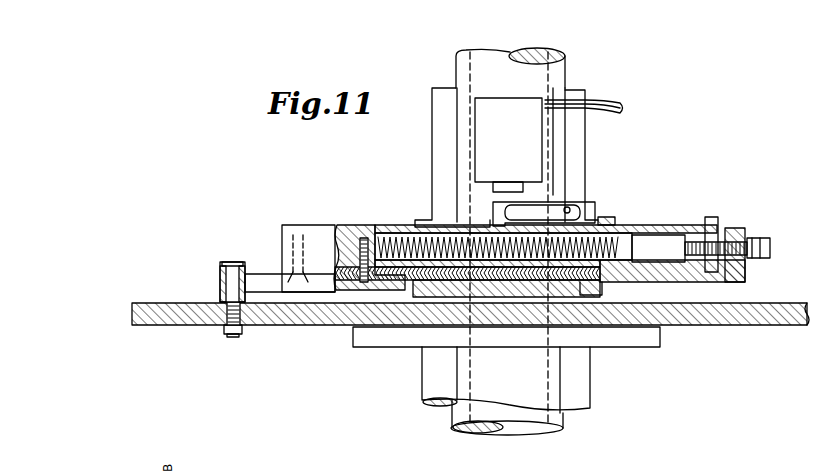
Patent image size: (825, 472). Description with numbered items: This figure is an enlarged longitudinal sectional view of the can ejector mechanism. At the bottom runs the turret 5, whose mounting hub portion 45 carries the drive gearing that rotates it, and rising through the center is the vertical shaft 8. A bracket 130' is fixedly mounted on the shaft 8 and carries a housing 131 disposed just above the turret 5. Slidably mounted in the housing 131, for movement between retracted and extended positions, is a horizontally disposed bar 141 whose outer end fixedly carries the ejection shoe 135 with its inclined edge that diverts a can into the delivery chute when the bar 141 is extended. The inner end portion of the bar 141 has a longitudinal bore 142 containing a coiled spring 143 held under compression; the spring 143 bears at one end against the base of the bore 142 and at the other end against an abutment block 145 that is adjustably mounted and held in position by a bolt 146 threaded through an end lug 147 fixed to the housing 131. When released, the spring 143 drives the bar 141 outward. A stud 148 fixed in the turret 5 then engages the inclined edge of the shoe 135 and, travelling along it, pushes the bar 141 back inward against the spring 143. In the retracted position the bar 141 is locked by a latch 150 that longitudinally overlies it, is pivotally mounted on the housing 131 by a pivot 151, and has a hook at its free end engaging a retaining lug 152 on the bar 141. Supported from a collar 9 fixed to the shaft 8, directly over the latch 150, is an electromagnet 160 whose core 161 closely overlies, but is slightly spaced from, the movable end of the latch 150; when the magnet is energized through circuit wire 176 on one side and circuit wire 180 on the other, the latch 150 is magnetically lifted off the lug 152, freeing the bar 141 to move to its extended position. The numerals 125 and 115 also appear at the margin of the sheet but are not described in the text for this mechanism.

The turret 5 is at (192, 303).
The shaft 8 is at (565, 70).
The collar 9 is at (432, 118).
The mounting hub portion 45 is at (570, 374).
The bracket 130' is at (494, 285).
The housing 131 is at (416, 224).
The ejection shoe 135 is at (262, 276).
The bar 141 is at (302, 230).
The longitudinal bore 142 is at (380, 228).
The coiled spring 143 is at (668, 246).
The abutment block 145 is at (690, 240).
The bolt 146 is at (719, 228).
The end lug 147 is at (743, 234).
The stud 148 is at (220, 278).
The latch 150 is at (505, 212).
The pivot 151 is at (583, 203).
The retaining lug 152 is at (569, 207).
The electromagnet 160 is at (478, 135).
The core 161 is at (522, 182).
The circuit wire 176 is at (619, 118).
The circuit wire 180 is at (614, 109).
The element of adjacent figure 125 is at (821, 427).
The element of adjacent figure 115 is at (818, 442).